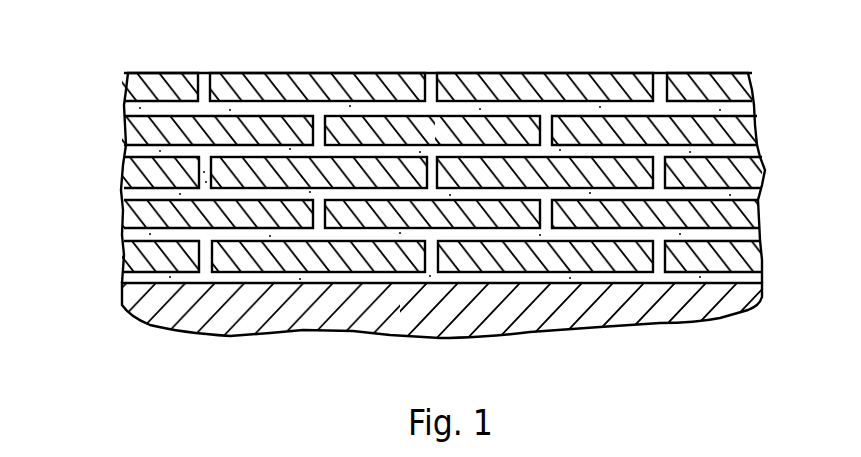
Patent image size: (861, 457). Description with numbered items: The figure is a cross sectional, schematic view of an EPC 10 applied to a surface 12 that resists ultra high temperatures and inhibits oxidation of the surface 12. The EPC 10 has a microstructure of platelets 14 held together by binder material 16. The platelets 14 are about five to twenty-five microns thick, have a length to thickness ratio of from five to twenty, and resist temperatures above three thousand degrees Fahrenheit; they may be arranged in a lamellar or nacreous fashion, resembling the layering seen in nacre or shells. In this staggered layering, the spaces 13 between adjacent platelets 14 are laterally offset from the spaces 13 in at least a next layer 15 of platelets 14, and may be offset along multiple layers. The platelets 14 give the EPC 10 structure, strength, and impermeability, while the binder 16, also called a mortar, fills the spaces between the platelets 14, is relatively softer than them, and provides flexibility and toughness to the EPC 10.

The EPC 10 is at (712, 54).
The surface 12 is at (692, 302).
The spaces 13 is at (206, 165).
The platelets 14 is at (308, 82).
The next layer 15 is at (106, 215).
The binder material 16 is at (432, 90).